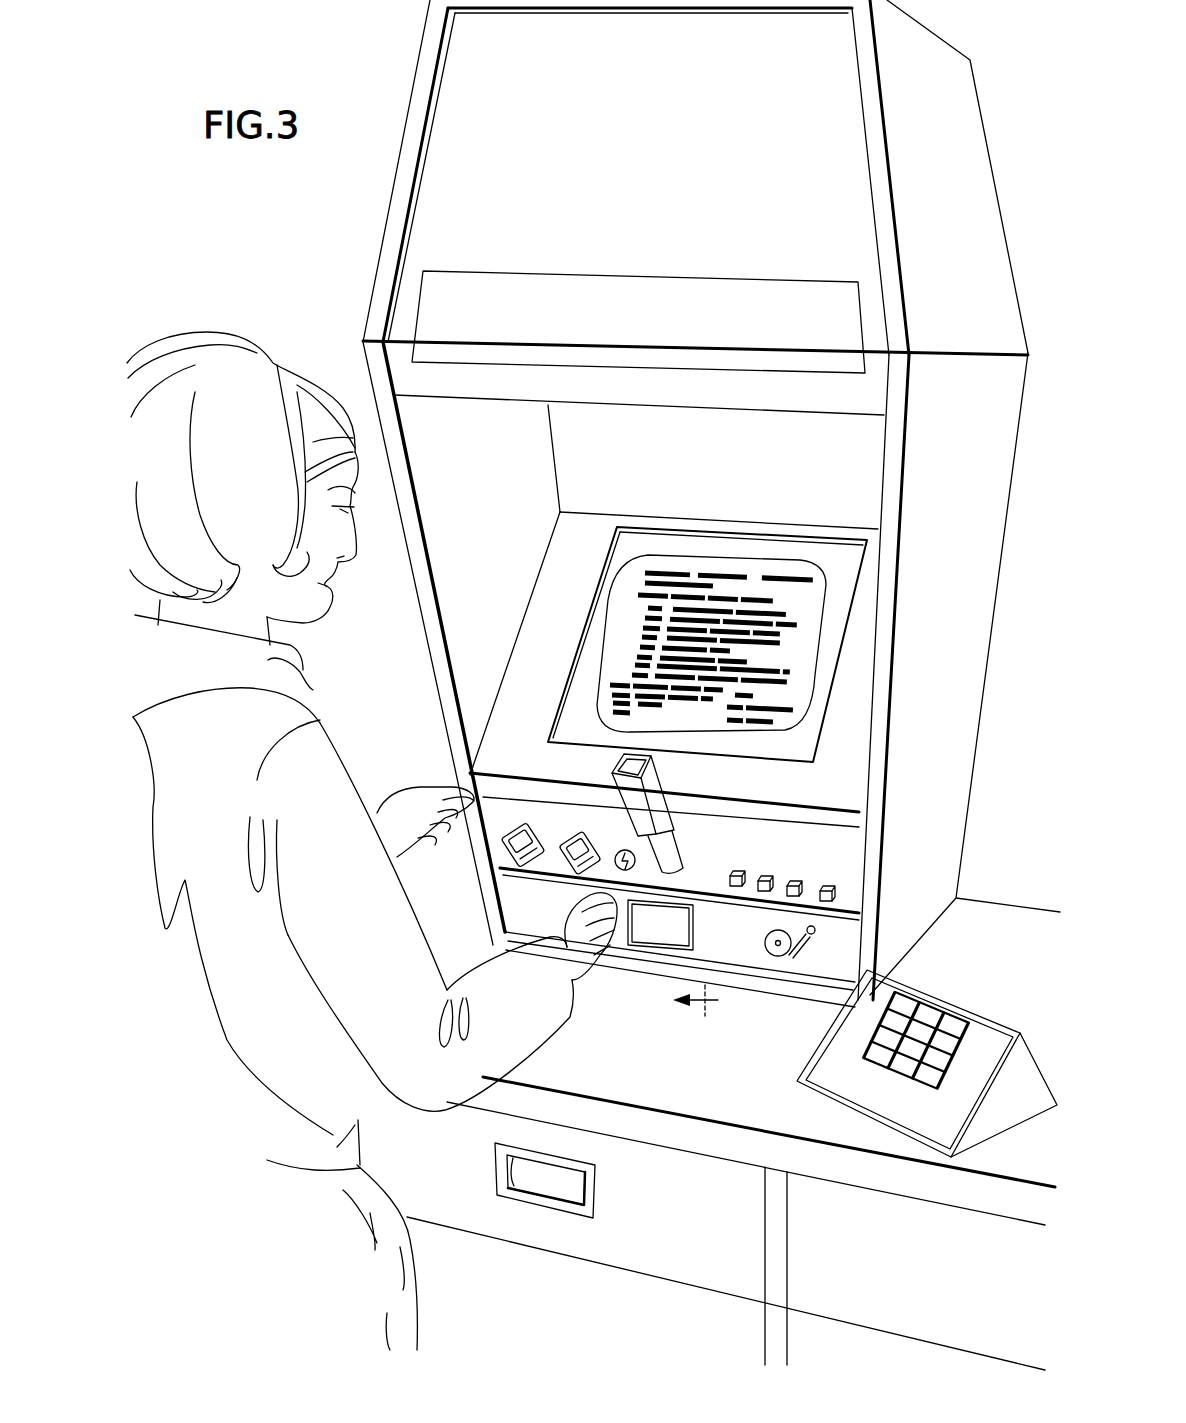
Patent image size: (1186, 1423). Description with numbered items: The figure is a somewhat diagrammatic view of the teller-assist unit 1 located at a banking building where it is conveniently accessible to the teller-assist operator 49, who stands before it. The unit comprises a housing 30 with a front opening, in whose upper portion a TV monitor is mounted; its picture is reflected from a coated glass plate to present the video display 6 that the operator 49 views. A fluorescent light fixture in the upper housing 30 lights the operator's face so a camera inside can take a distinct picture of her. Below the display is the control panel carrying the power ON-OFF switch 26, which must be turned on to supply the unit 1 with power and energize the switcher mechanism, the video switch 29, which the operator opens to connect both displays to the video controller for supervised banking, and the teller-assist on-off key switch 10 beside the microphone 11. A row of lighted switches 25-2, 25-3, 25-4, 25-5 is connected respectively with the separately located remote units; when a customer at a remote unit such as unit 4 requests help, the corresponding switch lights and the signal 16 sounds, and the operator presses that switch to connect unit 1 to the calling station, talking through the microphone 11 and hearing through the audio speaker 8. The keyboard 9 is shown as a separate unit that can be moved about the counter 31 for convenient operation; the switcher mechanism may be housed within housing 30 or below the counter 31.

The teller-assist unit 1 is at (410, 90).
The housing 30 is at (953, 575).
The video display 6 is at (620, 635).
The power ON-OFF switch 26 is at (508, 845).
The video switch 29 is at (576, 840).
The teller-assist on-off key switch 10 is at (622, 852).
The microphone 11 is at (652, 783).
The lighted switch 25-2 is at (738, 875).
The lighted switch 25-3 is at (766, 881).
The lighted switch 25-4 is at (796, 887).
The lighted switch 25-5 is at (829, 892).
The audio speaker 8 is at (673, 918).
The signal 16 is at (774, 953).
The remote unit 4 is at (686, 1000).
The keyboard 9 is at (840, 1038).
The counter 31 is at (920, 1178).
The teller-assist operator 49 is at (268, 660).